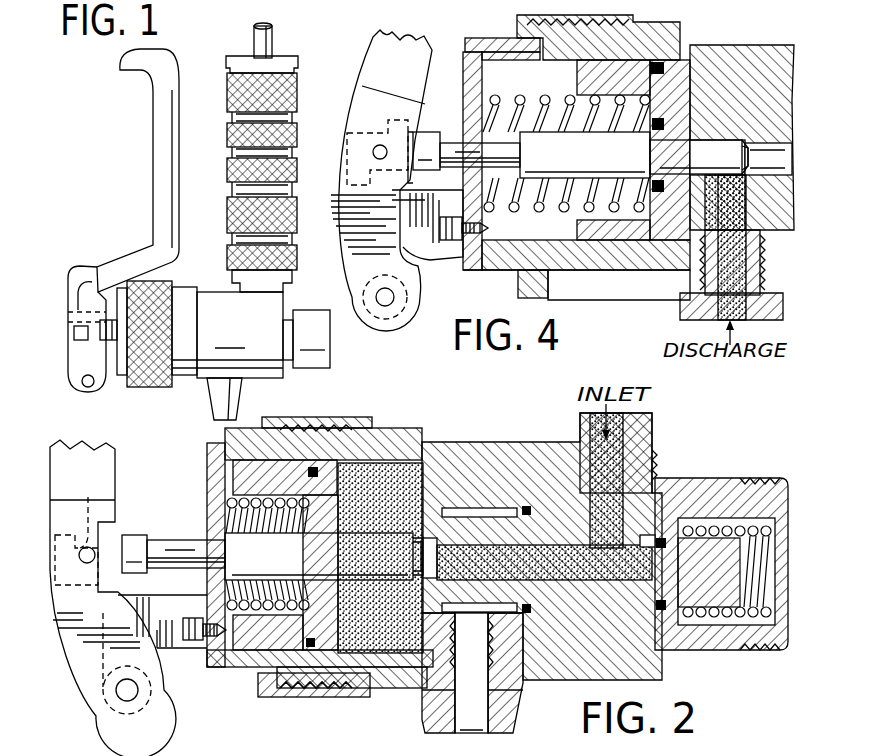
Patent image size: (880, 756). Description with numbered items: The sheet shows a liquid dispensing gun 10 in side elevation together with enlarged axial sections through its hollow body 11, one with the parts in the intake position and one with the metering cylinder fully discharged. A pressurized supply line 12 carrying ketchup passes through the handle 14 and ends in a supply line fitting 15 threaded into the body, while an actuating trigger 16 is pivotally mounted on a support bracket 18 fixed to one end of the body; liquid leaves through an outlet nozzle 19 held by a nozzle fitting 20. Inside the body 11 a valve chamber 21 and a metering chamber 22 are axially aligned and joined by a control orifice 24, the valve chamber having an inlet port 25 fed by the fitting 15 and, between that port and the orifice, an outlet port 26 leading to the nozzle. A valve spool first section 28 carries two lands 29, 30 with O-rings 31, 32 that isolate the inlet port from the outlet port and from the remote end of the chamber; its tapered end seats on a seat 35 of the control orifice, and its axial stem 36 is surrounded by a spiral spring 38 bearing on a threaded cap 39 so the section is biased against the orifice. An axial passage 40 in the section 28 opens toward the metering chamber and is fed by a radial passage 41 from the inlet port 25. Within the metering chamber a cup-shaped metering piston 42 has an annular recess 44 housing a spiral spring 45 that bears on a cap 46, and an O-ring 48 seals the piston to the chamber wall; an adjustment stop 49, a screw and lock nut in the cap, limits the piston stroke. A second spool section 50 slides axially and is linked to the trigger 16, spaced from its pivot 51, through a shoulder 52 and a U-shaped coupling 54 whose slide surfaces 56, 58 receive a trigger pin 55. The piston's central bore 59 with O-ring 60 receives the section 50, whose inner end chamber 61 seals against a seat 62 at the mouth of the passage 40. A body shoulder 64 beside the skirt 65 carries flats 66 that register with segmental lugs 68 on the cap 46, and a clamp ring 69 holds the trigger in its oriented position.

In FIG. 1, the dispensing gun 10 is at (137, 132).
In FIG. 2, the dispensing gun 10 is at (230, 720).
In FIG. 1, the hollow body 11 is at (185, 280).
In FIG. 4, the hollow body 11 is at (660, 295).
In FIG. 2, the hollow body 11 is at (397, 428).
In FIG. 1, the pressurized supply line 12 is at (274, 40).
In FIG. 1, the handle 14 is at (300, 88).
In FIG. 1, the supply line fitting 15 is at (234, 284).
In FIG. 2, the supply line fitting 15 is at (650, 418).
In FIG. 1, the actuating trigger 16 is at (156, 174).
In FIG. 4, the actuating trigger 16 is at (406, 52).
In FIG. 2, the actuating trigger 16 is at (116, 476).
In FIG. 1, the support bracket 18 is at (100, 384).
In FIG. 4, the support bracket 18 is at (412, 222).
In FIG. 2, the support bracket 18 is at (168, 646).
In FIG. 1, the outlet nozzle 19 is at (212, 400).
In FIG. 4, the outlet nozzle 19 is at (686, 316).
In FIG. 2, the outlet nozzle 19 is at (424, 715).
In FIG. 2, the nozzle fitting 20 is at (518, 670).
In FIG. 2, the valve chamber 21 is at (522, 508).
In FIG. 4, the metering chamber 22 is at (495, 56).
In FIG. 2, the metering chamber 22 is at (386, 466).
In FIG. 4, the control orifice 24 is at (692, 112).
In FIG. 2, the control orifice 24 is at (414, 536).
In FIG. 2, the inlet port 25 is at (622, 453).
In FIG. 4, the outlet port 26 is at (640, 232).
In FIG. 2, the outlet port 26 is at (492, 608).
In FIG. 4, the first valve spool section 28 is at (766, 115).
In FIG. 2, the first valve spool section 28 is at (488, 516).
In FIG. 2, the land 29 is at (556, 512).
In FIG. 2, the land 30 is at (720, 496).
In FIG. 2, the O-ring 31 is at (568, 610).
In FIG. 2, the O-ring 32 is at (660, 612).
In FIG. 2, the seat 35 is at (450, 524).
In FIG. 2, the axial stem 36 is at (724, 571).
In FIG. 2, the spiral spring 38 is at (700, 612).
In FIG. 1, the cap 39 is at (326, 343).
In FIG. 2, the cap 39 is at (750, 650).
In FIG. 4, the axial passage 40 is at (782, 170).
In FIG. 2, the axial passage 40 is at (566, 566).
In FIG. 2, the radial passage 41 is at (596, 560).
In FIG. 4, the metering piston 42 is at (578, 240).
In FIG. 2, the metering piston 42 is at (243, 475).
In FIG. 4, the annular recess 44 is at (592, 200).
In FIG. 2, the annular recess 44 is at (240, 520).
In FIG. 4, the spiral spring 45 is at (516, 210).
In FIG. 2, the spiral spring 45 is at (380, 558).
In FIG. 1, the cap 46 is at (123, 290).
In FIG. 4, the cap 46 is at (464, 62).
In FIG. 2, the cap 46 is at (207, 600).
In FIG. 4, the O-ring 48 is at (660, 70).
In FIG. 2, the O-ring 48 is at (303, 692).
In FIG. 4, the adjustment stop 49 is at (466, 250).
In FIG. 2, the adjustment stop 49 is at (206, 620).
In FIG. 4, the second valve spool section 50 is at (563, 128).
In FIG. 2, the second valve spool section 50 is at (184, 536).
In FIG. 4, the pivot 51 is at (390, 297).
In FIG. 2, the pivot 51 is at (123, 696).
In FIG. 4, the shoulder 52 is at (524, 156).
In FIG. 2, the shoulder 52 is at (226, 552).
In FIG. 4, the coupling 54 is at (426, 133).
In FIG. 2, the coupling 54 is at (140, 534).
In FIG. 4, the pin 55 is at (382, 144).
In FIG. 2, the pin 55 is at (76, 582).
In FIG. 2, the slide surface 56 is at (82, 548).
In FIG. 2, the slide surface 58 is at (76, 511).
In FIG. 4, the central bore 59 is at (656, 180).
In FIG. 2, the central bore 59 is at (330, 530).
In FIG. 4, the O-ring 60 is at (660, 186).
In FIG. 2, the O-ring 60 is at (318, 532).
In FIG. 4, the chamber 61 is at (735, 152).
In FIG. 2, the chamber 61 is at (413, 548).
In FIG. 4, the seat 62 is at (740, 172).
In FIG. 2, the seat 62 is at (418, 566).
In FIG. 2, the shoulder 64 is at (256, 664).
In FIG. 2, the skirt 65 is at (220, 672).
In FIG. 4, the flats 66 is at (546, 262).
In FIG. 2, the flats 66 is at (318, 442).
In FIG. 4, the segmental lugs 68 is at (522, 294).
In FIG. 2, the segmental lugs 68 is at (298, 428).
In FIG. 1, the clamp ring 69 is at (160, 330).
In FIG. 4, the clamp ring 69 is at (510, 285).
In FIG. 2, the clamp ring 69 is at (283, 698).